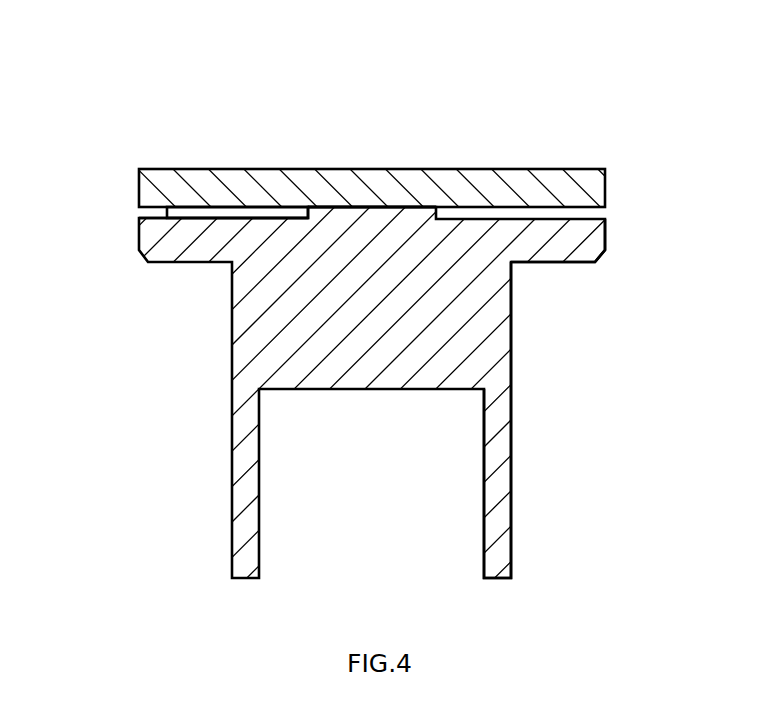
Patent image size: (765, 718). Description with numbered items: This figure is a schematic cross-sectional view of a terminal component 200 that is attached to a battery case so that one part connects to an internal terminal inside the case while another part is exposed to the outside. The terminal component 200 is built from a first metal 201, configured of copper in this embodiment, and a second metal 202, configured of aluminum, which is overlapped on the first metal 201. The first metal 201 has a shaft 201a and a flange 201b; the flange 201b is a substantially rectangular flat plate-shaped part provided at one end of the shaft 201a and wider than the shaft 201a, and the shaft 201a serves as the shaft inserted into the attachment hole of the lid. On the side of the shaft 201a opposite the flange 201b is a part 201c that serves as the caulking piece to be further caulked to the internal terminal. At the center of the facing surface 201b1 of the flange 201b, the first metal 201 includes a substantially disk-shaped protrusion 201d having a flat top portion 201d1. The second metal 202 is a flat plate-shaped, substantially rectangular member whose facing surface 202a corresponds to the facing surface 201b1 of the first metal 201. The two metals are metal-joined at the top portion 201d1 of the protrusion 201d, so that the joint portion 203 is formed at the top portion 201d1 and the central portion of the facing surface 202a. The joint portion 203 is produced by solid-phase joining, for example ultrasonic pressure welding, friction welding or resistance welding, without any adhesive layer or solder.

The terminal component 200 is at (578, 97).
The first metal 201 is at (192, 336).
The shaft 201a is at (512, 318).
The flange 201b is at (568, 262).
The facing surface 201b1 is at (166, 213).
The part serving as caulking piece 201c is at (512, 481).
The protrusion 201d is at (290, 208).
The top portion 201d1 is at (340, 205).
The second metal 202 is at (623, 184).
The facing surface 202a is at (214, 211).
The joint portion 203 is at (413, 205).